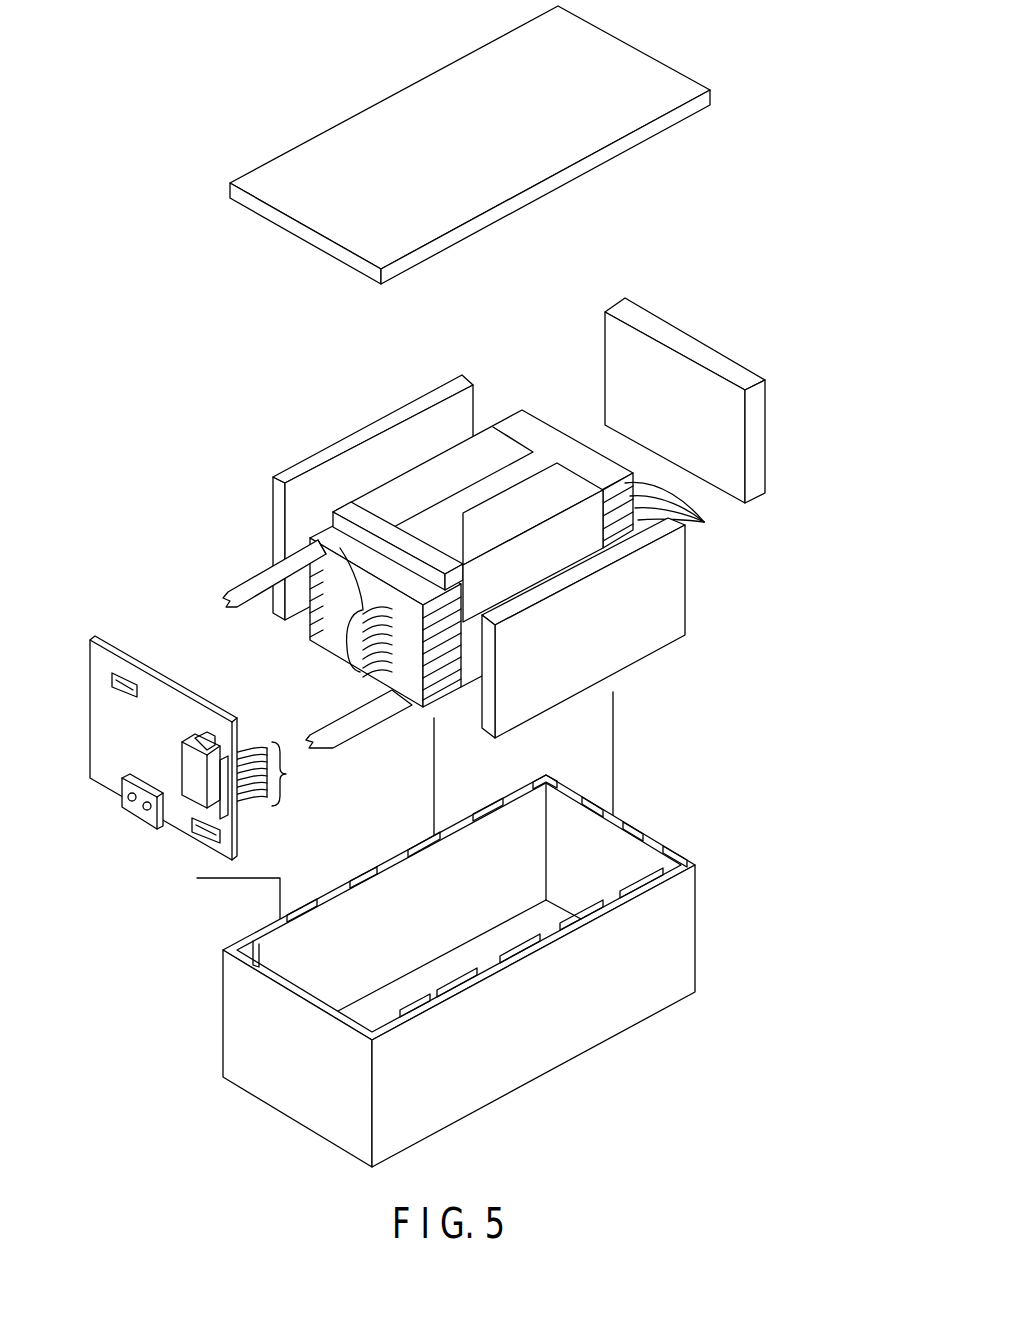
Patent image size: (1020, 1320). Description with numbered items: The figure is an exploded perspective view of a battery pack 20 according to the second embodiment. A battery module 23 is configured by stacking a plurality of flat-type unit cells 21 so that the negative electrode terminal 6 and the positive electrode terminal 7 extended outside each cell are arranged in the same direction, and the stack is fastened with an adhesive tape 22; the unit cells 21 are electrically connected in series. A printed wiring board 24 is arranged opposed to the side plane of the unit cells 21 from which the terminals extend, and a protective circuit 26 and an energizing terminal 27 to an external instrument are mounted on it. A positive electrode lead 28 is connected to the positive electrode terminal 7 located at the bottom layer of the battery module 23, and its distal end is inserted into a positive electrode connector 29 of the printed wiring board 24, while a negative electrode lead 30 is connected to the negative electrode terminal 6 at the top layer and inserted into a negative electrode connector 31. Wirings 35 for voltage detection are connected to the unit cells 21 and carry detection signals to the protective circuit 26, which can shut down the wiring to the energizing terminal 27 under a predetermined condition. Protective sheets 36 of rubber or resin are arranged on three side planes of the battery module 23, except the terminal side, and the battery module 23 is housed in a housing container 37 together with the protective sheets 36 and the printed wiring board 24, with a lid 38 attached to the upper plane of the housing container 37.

The battery pack 20 is at (132, 172).
The lid 38 is at (652, 80).
The protective sheets 36 is at (758, 448).
The battery module 23 is at (471, 561).
The adhesive tape 22 is at (548, 492).
The unit cells 21 is at (684, 509).
The positive electrode terminal 7 is at (400, 631).
The negative electrode terminal 6 is at (322, 538).
The negative electrode lead 30 is at (240, 585).
The wirings for voltage detection 35 is at (350, 656).
The positive electrode lead 28 is at (350, 735).
The housing container 37 is at (688, 931).
The printed wiring board 24 is at (124, 648).
The negative electrode connector 31 is at (132, 682).
The protective circuit 26 is at (193, 738).
The energizing terminal 27 is at (147, 822).
The positive electrode connector 29 is at (222, 834).